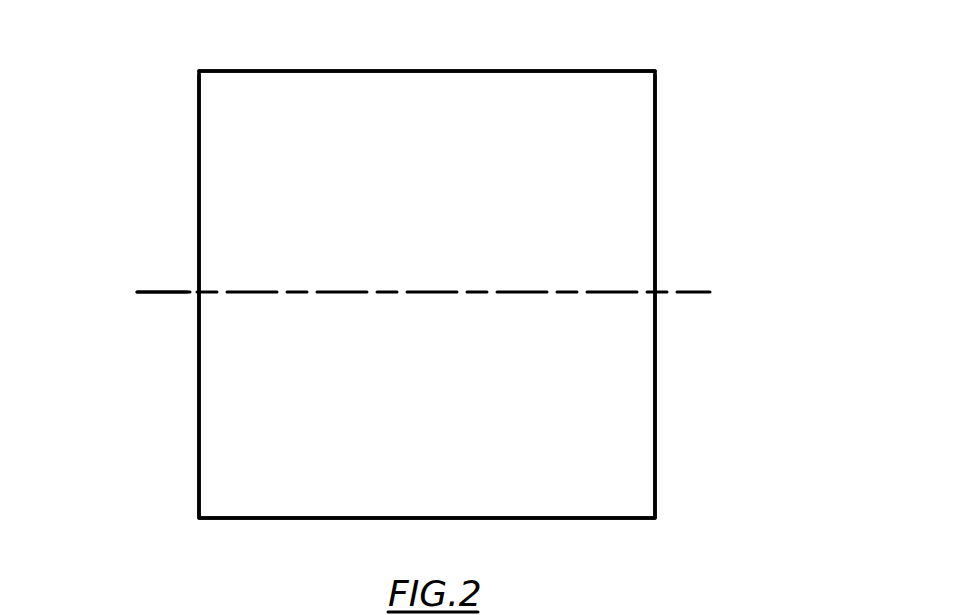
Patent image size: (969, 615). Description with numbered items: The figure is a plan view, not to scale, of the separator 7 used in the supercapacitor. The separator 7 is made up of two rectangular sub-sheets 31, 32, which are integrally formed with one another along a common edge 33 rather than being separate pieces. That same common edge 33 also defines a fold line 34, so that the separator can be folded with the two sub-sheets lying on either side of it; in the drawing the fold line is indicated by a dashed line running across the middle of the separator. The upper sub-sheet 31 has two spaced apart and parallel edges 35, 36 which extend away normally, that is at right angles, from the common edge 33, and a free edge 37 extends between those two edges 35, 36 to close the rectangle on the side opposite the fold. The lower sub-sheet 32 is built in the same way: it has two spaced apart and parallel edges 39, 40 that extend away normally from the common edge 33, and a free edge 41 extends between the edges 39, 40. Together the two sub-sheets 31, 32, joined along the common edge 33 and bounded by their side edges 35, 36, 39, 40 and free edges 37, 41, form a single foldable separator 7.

The separator 7 is at (668, 347).
The sub-sheet 31 is at (482, 168).
The sub-sheet 32 is at (482, 418).
The common edge 33 is at (518, 291).
The fold line 34 is at (177, 291).
The edge 35 is at (199, 155).
The edge 36 is at (655, 131).
The free edge 37 is at (240, 71).
The edge 39 is at (199, 426).
The edge 40 is at (655, 428).
The free edge 41 is at (605, 523).